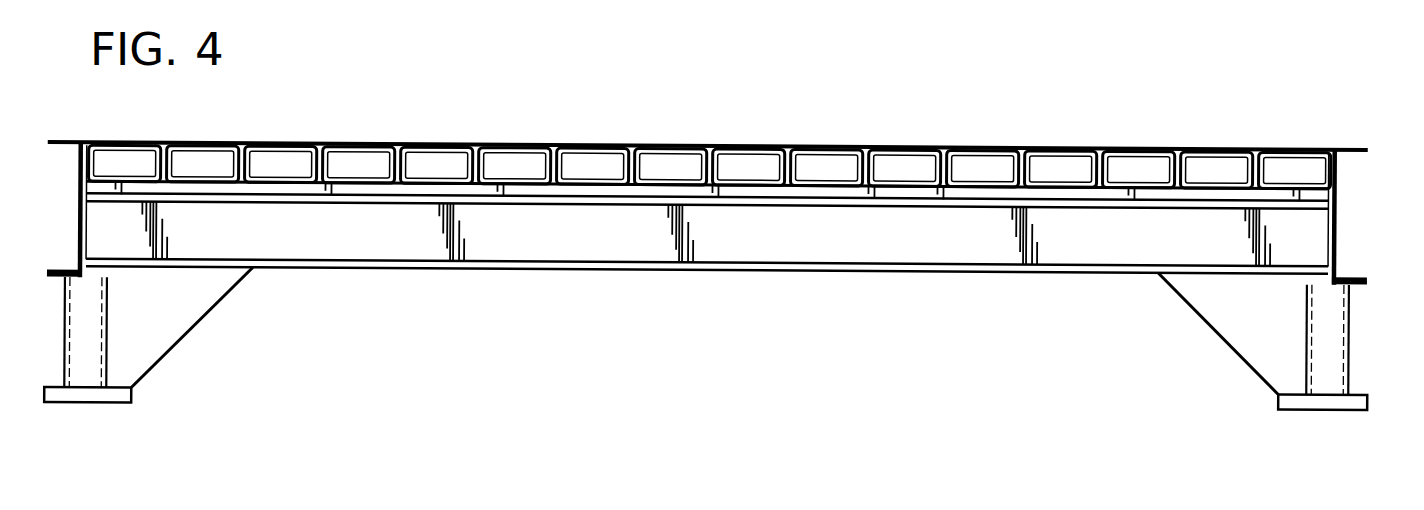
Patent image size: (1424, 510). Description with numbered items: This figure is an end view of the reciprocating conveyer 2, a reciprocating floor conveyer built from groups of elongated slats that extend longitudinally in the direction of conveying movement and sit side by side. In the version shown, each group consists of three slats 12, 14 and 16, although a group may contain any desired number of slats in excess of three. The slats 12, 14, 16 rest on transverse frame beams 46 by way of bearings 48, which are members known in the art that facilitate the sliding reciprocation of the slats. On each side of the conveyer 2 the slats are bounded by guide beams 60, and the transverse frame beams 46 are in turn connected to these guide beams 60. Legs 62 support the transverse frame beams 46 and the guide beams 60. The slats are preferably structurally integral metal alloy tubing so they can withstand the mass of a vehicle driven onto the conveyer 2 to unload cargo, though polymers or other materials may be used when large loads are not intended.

The reciprocating conveyer 2 is at (812, 106).
The slat 12 is at (118, 147).
The slat 14 is at (200, 146).
The slat 16 is at (288, 146).
The transverse frame beam 46 is at (797, 258).
The bearing 48 is at (855, 191).
The guide beam 60 is at (67, 147).
The leg 62 is at (93, 330).